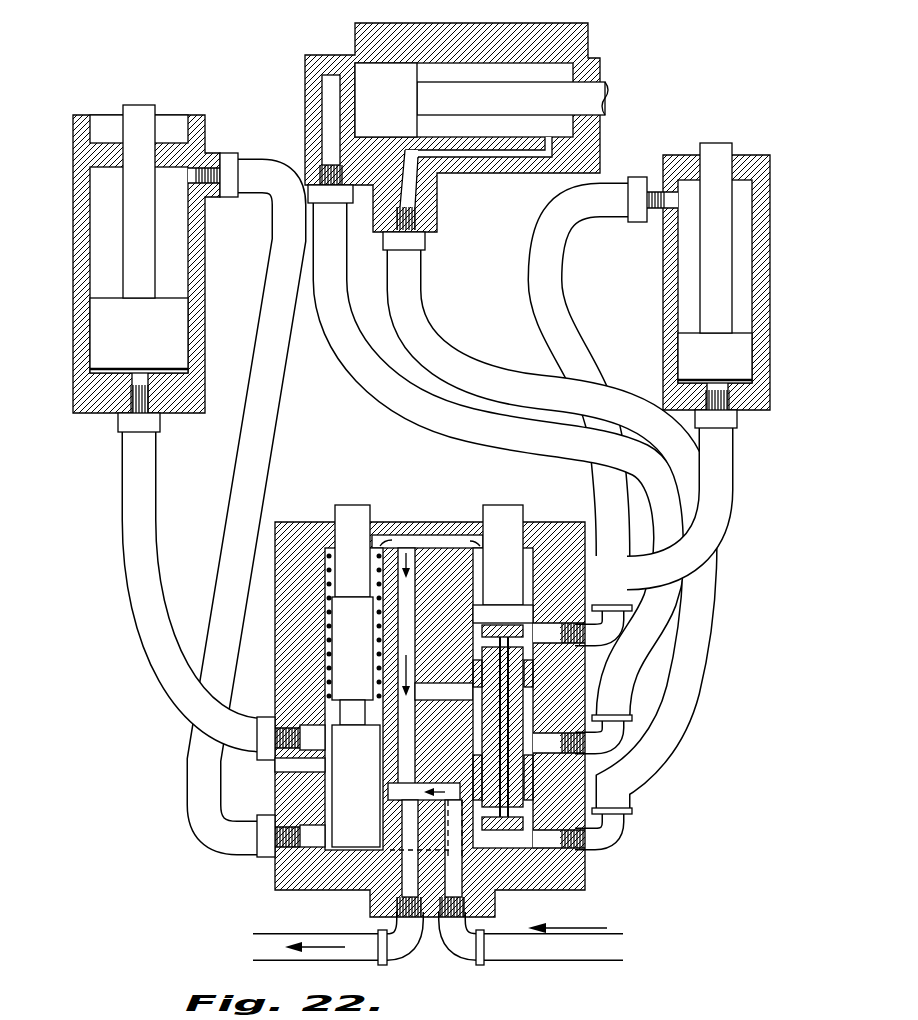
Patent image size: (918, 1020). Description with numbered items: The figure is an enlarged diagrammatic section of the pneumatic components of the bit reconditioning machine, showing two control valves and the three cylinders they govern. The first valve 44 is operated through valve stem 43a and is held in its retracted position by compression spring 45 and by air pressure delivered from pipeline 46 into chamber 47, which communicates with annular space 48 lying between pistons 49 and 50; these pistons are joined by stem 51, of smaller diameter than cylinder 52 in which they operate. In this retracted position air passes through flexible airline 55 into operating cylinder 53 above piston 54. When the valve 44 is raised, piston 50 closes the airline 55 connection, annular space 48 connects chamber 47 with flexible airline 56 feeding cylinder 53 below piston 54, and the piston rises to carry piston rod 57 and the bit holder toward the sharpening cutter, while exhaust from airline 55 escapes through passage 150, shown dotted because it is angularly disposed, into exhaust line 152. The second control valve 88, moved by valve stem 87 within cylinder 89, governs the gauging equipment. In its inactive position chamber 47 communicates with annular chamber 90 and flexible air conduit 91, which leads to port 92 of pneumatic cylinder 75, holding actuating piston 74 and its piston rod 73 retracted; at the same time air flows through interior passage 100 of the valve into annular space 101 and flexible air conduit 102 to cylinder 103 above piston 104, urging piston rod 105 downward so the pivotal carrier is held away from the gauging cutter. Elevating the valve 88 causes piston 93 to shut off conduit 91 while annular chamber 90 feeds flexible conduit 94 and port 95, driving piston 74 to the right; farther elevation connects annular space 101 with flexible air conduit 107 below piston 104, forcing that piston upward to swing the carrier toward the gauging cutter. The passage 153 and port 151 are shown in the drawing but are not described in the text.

The valve stem 43a is at (363, 515).
The valve 44 is at (356, 786).
The compression spring 45 is at (327, 678).
The pipeline 46 is at (556, 950).
The chamber 47 is at (460, 855).
The annular space 48 is at (327, 792).
The piston 49 is at (330, 765).
The piston 50 is at (337, 853).
The stem 51 is at (337, 823).
The cylinder 52 is at (325, 807).
The operating cylinder 53 is at (141, 268).
The piston 54 is at (139, 335).
The flexible airline 55 is at (262, 462).
The flexible airline 56 is at (133, 606).
The piston rod 57 is at (123, 218).
The piston rod 73 is at (503, 117).
The actuating piston 74 is at (400, 93).
The pneumatic cylinder 75 is at (423, 136).
The pneumatic valve stem 87 is at (512, 513).
The control valve 88 is at (523, 710).
The cylinder 89 is at (533, 723).
The annular chamber 90 is at (533, 805).
The flexible air conduit 91 is at (433, 333).
The port 92 is at (542, 153).
The piston 93 is at (523, 855).
The flexible conduit 94 is at (334, 343).
The port 95 is at (325, 147).
The interior passage 100 is at (504, 768).
The annular space 101 is at (530, 636).
The flexible air conduit 102 is at (593, 358).
The cylinder 103 is at (723, 285).
The piston 104 is at (748, 342).
The piston rod 105 is at (725, 277).
The flexible air conduit 107 is at (723, 495).
The passage 150 is at (368, 893).
The inlet port 151 is at (553, 893).
The exhaust line 152 is at (403, 948).
The passage 153 is at (437, 540).